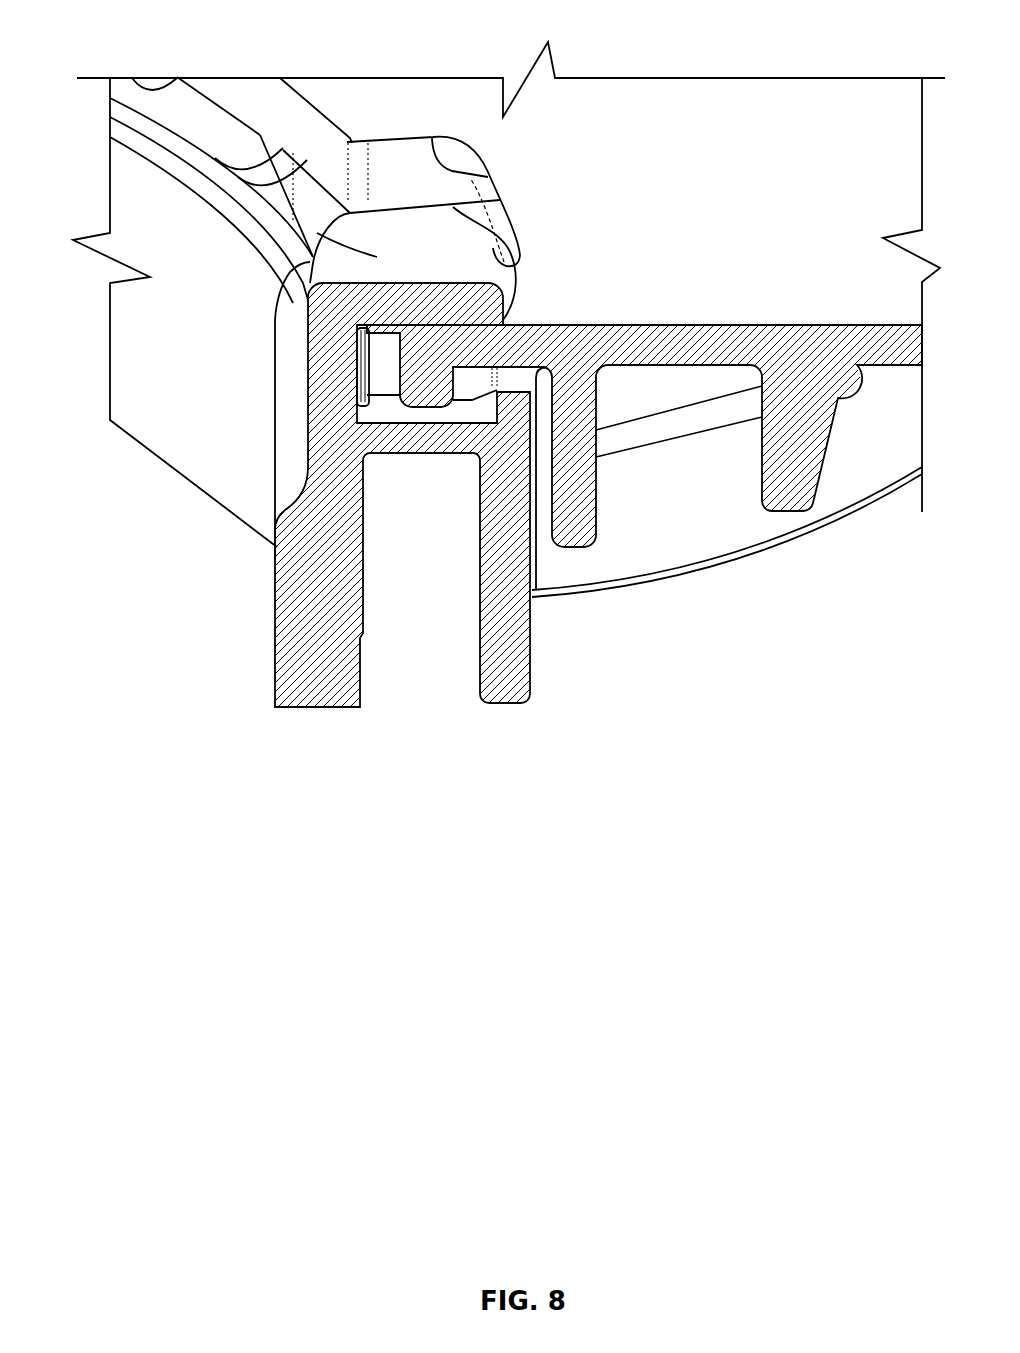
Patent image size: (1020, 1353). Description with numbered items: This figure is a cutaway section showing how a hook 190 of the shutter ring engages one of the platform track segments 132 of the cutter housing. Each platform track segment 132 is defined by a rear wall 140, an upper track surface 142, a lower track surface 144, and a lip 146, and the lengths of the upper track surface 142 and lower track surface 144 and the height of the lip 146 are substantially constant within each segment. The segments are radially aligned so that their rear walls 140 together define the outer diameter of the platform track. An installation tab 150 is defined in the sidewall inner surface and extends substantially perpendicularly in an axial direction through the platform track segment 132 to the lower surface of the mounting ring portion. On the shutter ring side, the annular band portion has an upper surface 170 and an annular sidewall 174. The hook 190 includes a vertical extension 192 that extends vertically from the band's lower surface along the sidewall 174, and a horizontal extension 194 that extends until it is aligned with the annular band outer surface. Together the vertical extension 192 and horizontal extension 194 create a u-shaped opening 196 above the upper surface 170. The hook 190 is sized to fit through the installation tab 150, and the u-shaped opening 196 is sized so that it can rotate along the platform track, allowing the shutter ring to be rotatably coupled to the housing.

The platform track segment 132 is at (323, 107).
The rear wall 140 is at (541, 388).
The upper track surface 142 is at (370, 330).
The lower track surface 144 is at (422, 407).
The lip 146 is at (383, 378).
The installation tab 150 is at (430, 139).
The upper surface 170 is at (335, 395).
The sidewall 174 is at (150, 220).
The hook 190 is at (306, 256).
The vertical extension 192 is at (357, 347).
The horizontal extension 194 is at (513, 282).
The u-shaped opening 196 is at (343, 390).